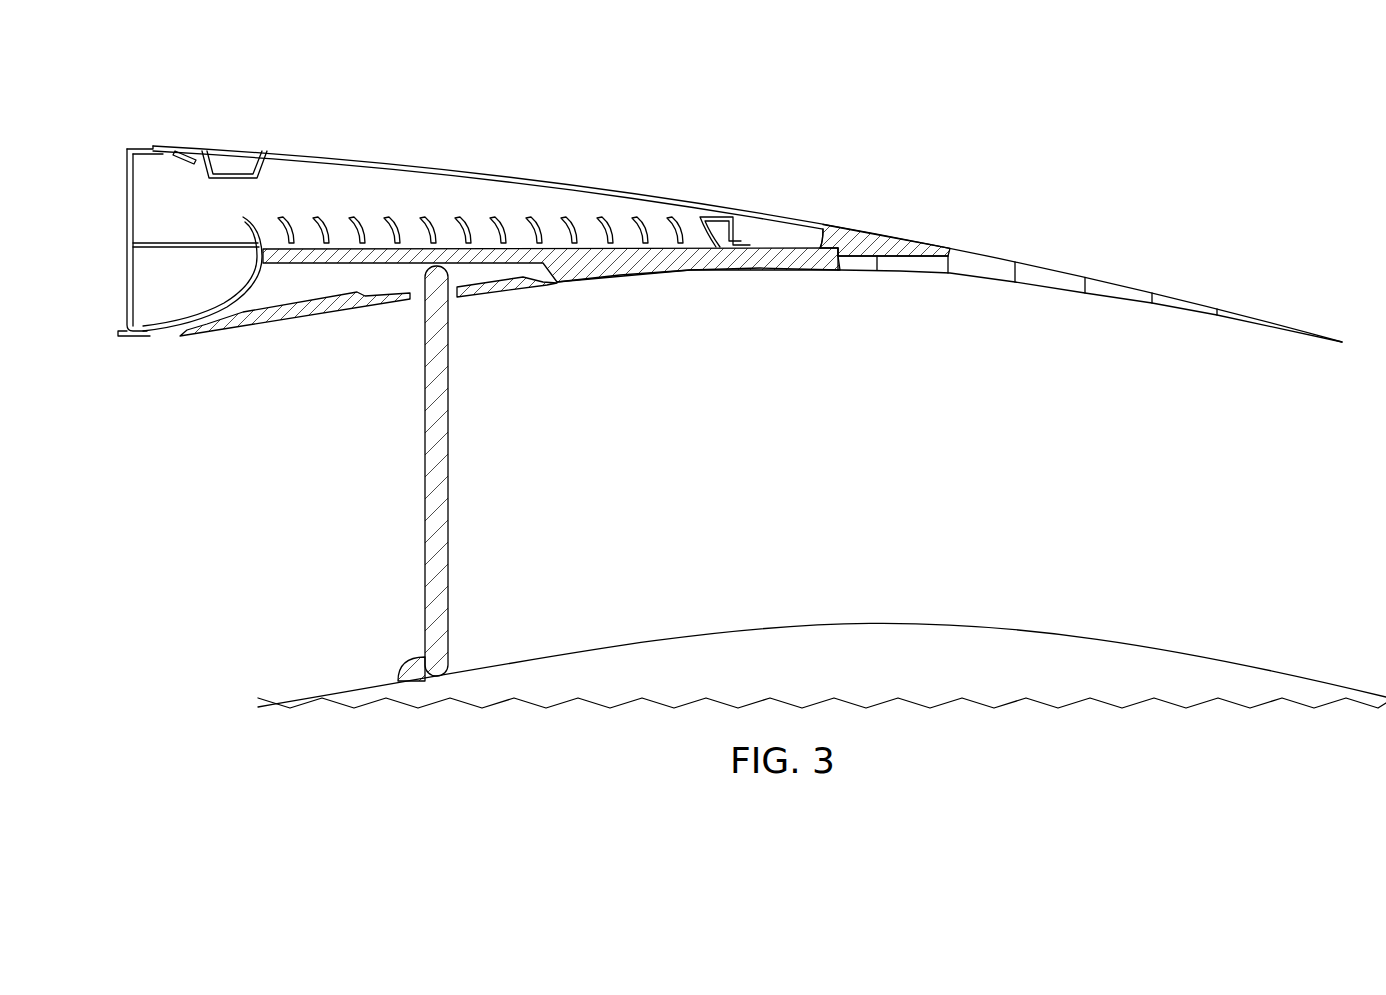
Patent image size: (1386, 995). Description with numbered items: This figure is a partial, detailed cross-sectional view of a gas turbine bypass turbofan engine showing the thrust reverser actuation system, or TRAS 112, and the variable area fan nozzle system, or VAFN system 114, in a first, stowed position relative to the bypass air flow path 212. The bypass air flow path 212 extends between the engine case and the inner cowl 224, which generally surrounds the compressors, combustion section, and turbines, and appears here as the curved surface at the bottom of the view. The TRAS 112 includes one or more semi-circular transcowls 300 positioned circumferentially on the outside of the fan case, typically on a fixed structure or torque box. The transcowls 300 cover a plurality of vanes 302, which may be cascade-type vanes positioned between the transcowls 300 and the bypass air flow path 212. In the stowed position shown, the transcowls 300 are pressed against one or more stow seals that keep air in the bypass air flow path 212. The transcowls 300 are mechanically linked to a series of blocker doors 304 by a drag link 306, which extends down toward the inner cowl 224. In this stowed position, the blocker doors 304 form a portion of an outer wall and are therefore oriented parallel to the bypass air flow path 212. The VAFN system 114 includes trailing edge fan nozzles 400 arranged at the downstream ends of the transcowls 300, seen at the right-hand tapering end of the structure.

The TRAS 112 is at (317, 147).
The VAFN system 114 is at (1123, 240).
The bypass air flow path 212 is at (635, 497).
The inner cowl 224 is at (755, 636).
The transcowl 300 is at (469, 171).
The vanes 302 is at (462, 216).
The blocker doors 304 is at (256, 326).
The drag link 306 is at (448, 556).
The trailing edge fan nozzles 400 is at (1033, 266).